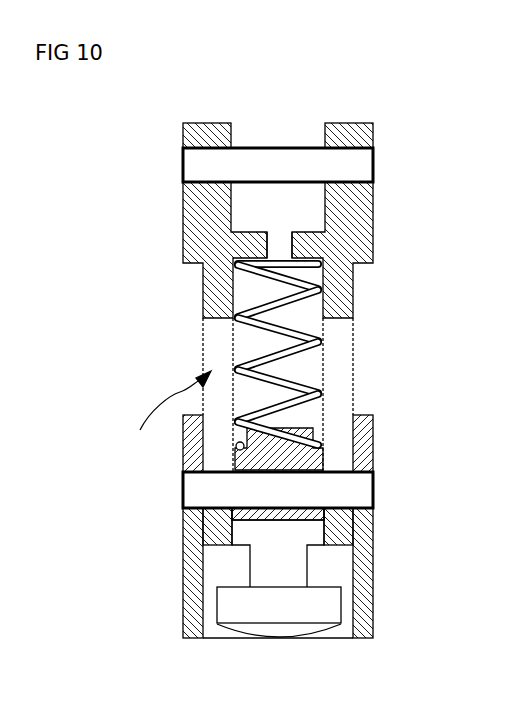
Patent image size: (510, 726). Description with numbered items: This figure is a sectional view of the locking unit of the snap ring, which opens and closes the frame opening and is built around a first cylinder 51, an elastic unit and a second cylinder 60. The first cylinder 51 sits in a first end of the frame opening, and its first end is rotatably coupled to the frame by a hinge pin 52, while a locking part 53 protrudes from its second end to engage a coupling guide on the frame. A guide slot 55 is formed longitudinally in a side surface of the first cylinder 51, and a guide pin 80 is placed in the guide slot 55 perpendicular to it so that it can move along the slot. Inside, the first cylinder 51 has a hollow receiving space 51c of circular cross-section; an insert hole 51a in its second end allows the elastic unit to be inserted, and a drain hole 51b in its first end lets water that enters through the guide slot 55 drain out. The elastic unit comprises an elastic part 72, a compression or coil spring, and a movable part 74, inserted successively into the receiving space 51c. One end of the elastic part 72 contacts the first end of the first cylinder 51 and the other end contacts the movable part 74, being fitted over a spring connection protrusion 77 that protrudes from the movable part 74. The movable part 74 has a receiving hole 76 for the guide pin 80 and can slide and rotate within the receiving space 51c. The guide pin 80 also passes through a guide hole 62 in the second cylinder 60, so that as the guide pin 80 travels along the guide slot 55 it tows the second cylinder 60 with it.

The first cylinder 51 is at (353, 292).
The insert hole 51a is at (270, 529).
The drain hole 51b is at (283, 240).
The receiving space 51c is at (293, 362).
The hinge pin 52 is at (360, 165).
The locking part 53 is at (233, 615).
The guide slot 55 is at (163, 407).
The second cylinder 60 is at (194, 566).
The guide hole 62 is at (190, 512).
The elastic part 72 is at (232, 332).
The movable part 74 is at (373, 442).
The receiving hole 76 is at (333, 533).
The spring connection protrusion 77 is at (317, 428).
The guide pin 80 is at (373, 495).